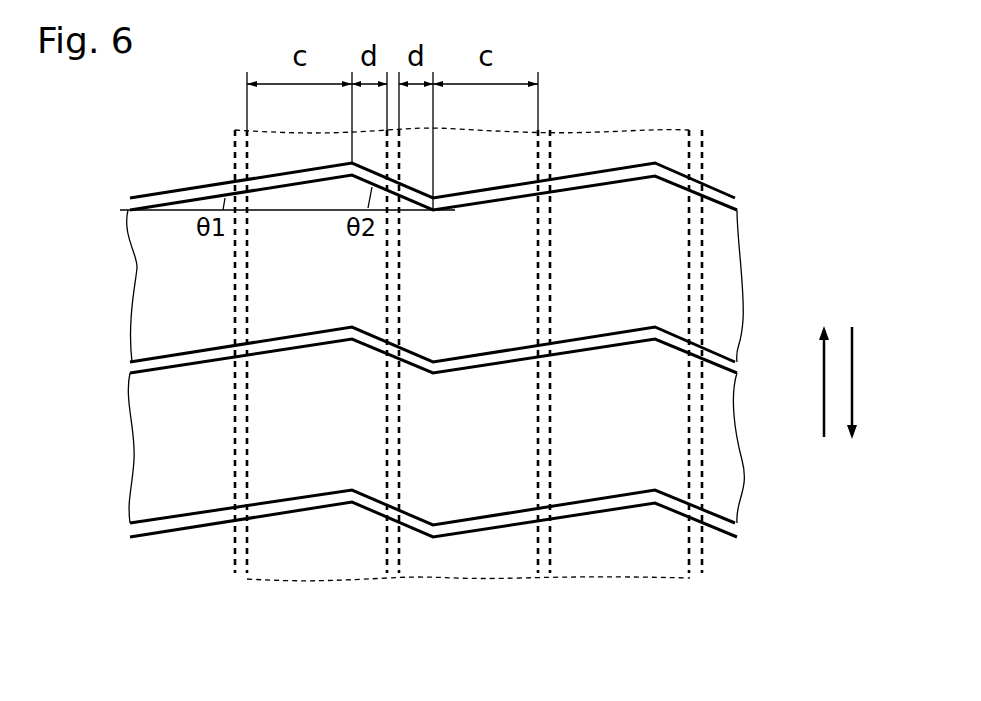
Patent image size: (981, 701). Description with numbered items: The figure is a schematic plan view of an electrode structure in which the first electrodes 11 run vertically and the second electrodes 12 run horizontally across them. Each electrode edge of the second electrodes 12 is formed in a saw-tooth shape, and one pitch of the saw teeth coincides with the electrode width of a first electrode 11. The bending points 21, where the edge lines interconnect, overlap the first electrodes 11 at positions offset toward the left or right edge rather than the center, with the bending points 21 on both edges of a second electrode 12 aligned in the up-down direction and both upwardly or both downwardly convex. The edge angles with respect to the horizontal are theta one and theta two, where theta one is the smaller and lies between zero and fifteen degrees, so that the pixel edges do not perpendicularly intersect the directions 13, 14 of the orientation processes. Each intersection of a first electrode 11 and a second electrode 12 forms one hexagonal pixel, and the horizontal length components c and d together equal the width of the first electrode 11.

The first electrode 11 is at (318, 580).
The second electrode 12 is at (137, 268).
The direction of orientation process 13 is at (806, 381).
The direction of orientation process 14 is at (870, 383).
The bending point 21 is at (352, 177).